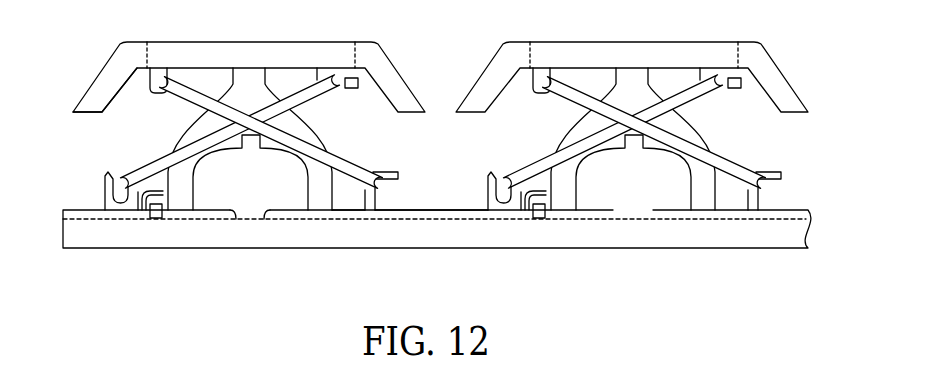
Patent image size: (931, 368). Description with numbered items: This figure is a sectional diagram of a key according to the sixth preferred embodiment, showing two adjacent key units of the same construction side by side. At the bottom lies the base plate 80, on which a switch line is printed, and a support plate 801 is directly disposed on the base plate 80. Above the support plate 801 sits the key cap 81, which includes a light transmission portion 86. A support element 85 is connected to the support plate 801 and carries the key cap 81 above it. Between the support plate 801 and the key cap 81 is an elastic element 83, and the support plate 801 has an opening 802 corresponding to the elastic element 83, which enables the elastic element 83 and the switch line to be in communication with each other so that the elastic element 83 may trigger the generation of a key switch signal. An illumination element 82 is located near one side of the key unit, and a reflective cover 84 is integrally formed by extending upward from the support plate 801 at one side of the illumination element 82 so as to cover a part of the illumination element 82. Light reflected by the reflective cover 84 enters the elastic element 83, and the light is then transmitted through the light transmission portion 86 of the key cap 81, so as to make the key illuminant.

The base plate 80 is at (132, 243).
The support plate 801 is at (398, 213).
The opening 802 is at (252, 213).
The key cap 81 is at (110, 78).
The illumination element 82 is at (162, 213).
The elastic element 83 is at (310, 130).
The reflective cover 84 is at (155, 188).
The support element 85 is at (348, 167).
The light transmission portion 86 is at (297, 50).